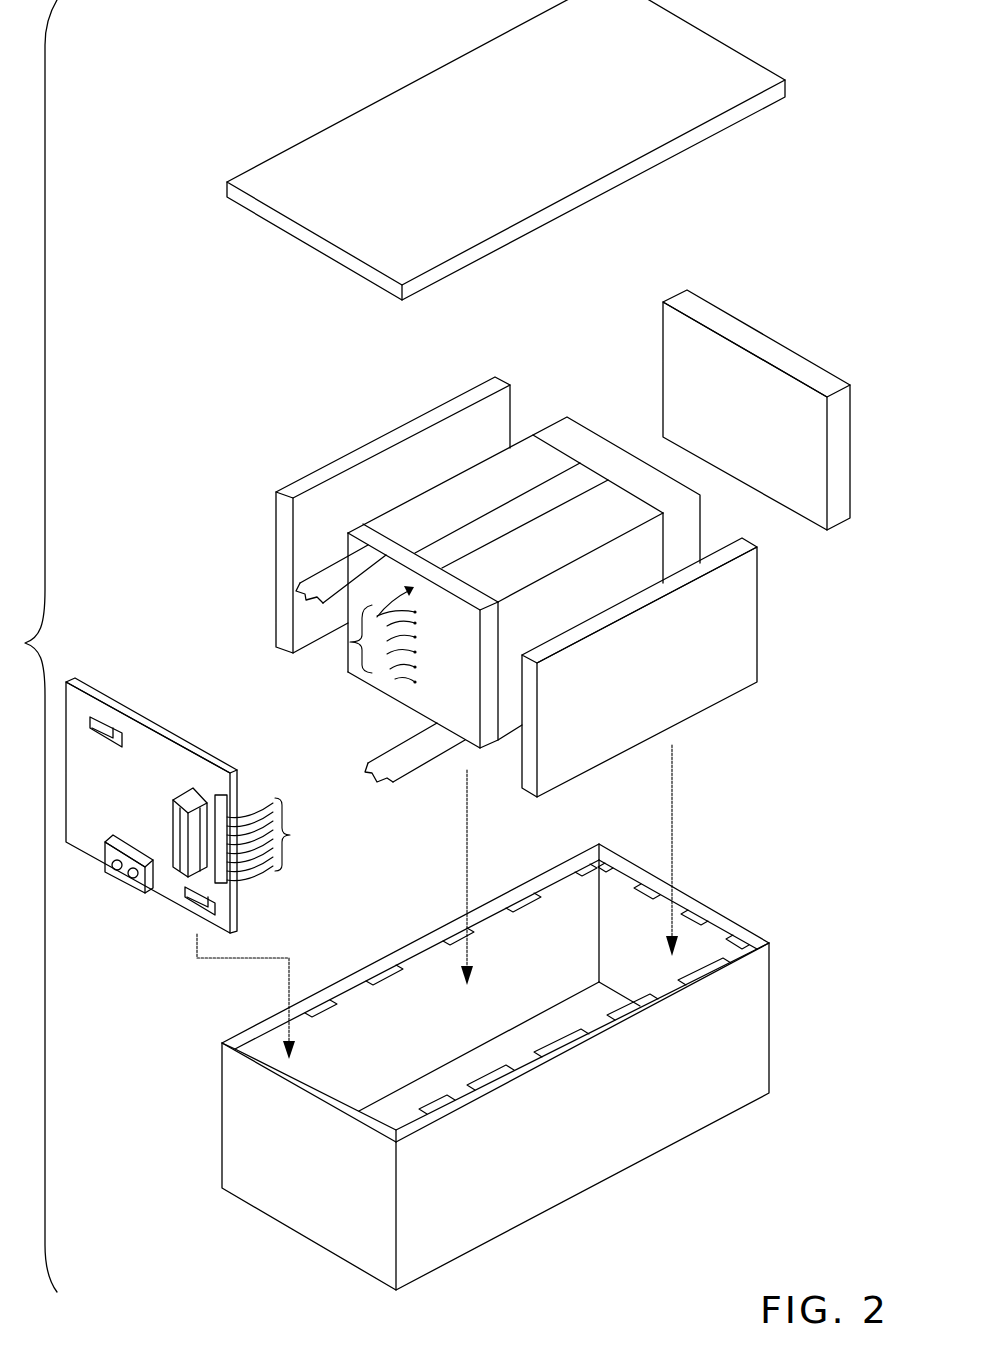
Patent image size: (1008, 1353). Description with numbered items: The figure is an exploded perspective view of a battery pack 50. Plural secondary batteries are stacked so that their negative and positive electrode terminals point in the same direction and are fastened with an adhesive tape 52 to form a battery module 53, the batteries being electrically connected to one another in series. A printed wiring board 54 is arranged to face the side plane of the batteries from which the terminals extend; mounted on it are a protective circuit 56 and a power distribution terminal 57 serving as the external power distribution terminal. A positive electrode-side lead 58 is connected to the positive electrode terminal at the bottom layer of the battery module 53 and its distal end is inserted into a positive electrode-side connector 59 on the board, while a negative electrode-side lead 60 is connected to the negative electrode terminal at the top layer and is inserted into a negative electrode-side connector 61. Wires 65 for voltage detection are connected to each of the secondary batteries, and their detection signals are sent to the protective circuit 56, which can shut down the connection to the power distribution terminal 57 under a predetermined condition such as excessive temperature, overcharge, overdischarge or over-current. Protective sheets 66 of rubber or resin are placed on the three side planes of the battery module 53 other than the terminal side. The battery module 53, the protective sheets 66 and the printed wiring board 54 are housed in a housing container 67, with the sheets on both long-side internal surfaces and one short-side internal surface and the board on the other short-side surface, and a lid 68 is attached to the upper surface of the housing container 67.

The battery pack 50 is at (224, 90).
The adhesive tape 52 is at (598, 514).
The battery module 53 is at (524, 558).
The printed wiring board 54 is at (183, 774).
The protective circuit 56 is at (190, 793).
The power distribution terminal 57 is at (133, 883).
The positive electrode-side lead 58 is at (408, 758).
The positive electrode-side connector 59 is at (217, 909).
The negative electrode-side lead 60 is at (300, 590).
The negative electrode-side connector 61 is at (113, 728).
The wires for voltage detection 65 is at (348, 643).
The protective sheets 66 is at (352, 462).
The housing container 67 is at (757, 1024).
The lid 68 is at (718, 67).